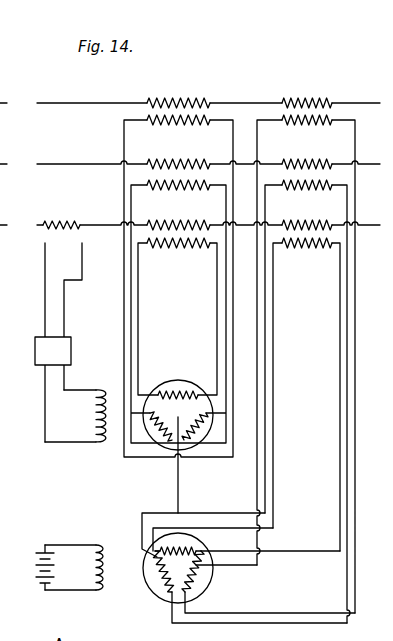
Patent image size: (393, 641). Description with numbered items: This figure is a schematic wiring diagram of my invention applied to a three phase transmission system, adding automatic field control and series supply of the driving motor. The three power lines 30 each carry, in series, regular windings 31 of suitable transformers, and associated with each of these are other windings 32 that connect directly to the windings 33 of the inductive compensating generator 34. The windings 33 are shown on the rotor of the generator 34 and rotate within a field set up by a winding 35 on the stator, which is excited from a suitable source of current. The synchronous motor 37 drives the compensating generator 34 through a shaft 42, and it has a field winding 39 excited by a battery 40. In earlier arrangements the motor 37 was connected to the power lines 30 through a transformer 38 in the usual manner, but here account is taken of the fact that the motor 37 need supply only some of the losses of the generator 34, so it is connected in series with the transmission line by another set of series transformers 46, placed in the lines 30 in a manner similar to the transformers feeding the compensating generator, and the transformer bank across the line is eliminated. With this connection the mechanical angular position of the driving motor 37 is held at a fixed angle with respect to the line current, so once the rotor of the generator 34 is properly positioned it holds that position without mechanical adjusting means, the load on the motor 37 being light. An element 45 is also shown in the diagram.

The power lines 30 is at (63, 101).
The regular windings 31 is at (181, 98).
The other windings 32 is at (181, 128).
The windings 33 is at (196, 392).
The inductive compensating generator 34 is at (158, 418).
The winding 35 is at (108, 442).
The synchronous motor 37 is at (160, 598).
The transformer 38 is at (6, 462).
The field winding 39 is at (103, 546).
The battery 40 is at (38, 553).
The shaft 42 is at (174, 488).
The relay 45 is at (75, 339).
The series transformers 46 is at (296, 97).